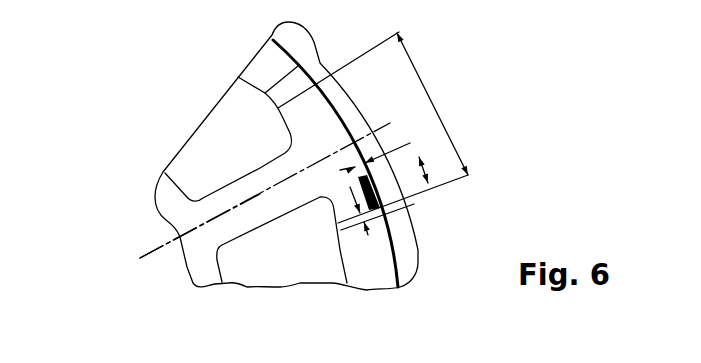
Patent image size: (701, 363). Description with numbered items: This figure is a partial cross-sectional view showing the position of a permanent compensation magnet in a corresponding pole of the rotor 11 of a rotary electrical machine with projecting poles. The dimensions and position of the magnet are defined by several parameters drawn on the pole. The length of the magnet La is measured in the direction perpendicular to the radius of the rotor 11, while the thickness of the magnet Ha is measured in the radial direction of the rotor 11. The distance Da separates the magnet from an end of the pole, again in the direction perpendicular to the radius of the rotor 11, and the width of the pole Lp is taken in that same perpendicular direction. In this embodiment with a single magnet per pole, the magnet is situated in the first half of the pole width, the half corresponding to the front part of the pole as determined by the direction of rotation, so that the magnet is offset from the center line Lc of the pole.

The rotor 11 is at (258, 214).
The center line of the pole Lc is at (148, 257).
The width of the pole Lp is at (424, 88).
The thickness of the magnet Ha is at (340, 170).
The length of the magnet La is at (417, 162).
The distance between the magnet and an end of the pole Da is at (352, 213).